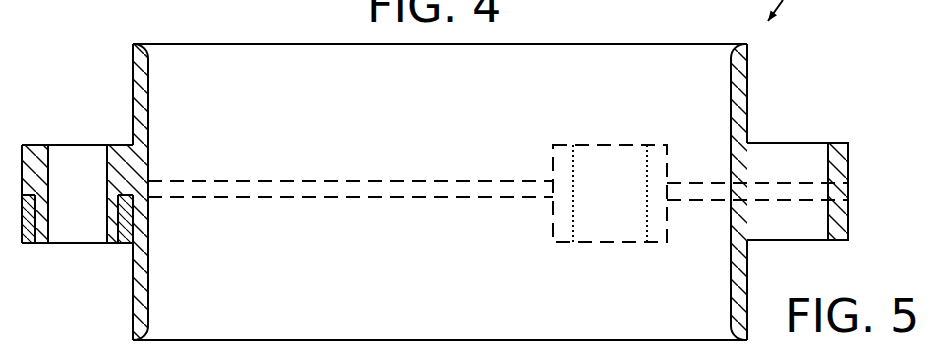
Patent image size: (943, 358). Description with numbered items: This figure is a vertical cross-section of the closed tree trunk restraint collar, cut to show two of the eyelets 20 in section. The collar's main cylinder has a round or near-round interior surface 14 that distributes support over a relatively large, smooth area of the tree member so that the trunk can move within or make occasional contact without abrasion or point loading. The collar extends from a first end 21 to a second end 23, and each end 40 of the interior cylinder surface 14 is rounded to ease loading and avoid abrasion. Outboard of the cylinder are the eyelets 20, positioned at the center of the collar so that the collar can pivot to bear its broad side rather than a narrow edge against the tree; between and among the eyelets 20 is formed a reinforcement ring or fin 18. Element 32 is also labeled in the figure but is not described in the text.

The interior surface 14 is at (150, 131).
The reinforcement ring 18 is at (443, 182).
The eyelet 20 is at (33, 163).
The first end 21 is at (133, 44).
The second end 23 is at (150, 332).
The end plate 32 is at (133, 99).
The end of the interior cylinder surface 40 is at (148, 55).